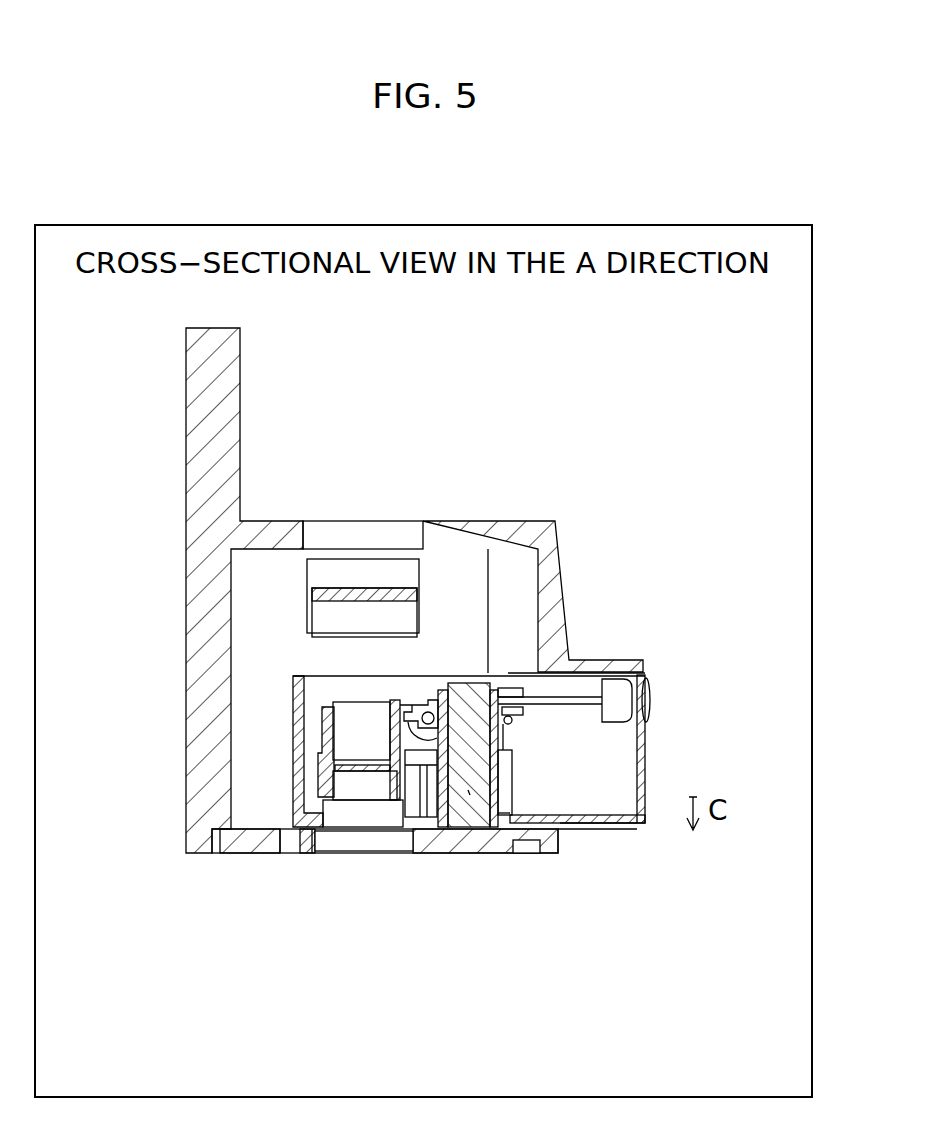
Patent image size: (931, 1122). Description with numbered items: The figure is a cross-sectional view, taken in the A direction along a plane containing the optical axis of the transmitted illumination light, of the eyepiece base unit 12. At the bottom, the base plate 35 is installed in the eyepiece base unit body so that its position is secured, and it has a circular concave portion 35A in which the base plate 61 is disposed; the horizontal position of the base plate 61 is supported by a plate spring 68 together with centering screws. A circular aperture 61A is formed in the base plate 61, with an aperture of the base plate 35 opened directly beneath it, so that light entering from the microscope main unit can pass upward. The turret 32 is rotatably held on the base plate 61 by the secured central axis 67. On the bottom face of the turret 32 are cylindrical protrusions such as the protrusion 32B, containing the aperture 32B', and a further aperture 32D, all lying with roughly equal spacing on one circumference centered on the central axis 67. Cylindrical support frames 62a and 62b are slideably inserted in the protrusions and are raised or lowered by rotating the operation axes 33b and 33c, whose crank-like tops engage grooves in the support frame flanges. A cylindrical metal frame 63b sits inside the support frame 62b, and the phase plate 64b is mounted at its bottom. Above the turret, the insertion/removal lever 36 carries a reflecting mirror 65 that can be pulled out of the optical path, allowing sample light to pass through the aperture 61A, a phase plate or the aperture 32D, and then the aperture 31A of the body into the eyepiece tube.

The eyepiece base unit 12 is at (637, 378).
The aperture of the eyepiece base unit body 31A is at (363, 521).
The insertion/removal lever 36 is at (307, 578).
The reflecting mirror 65 is at (385, 589).
The turret 32 is at (648, 752).
The cylindrical protrusion 32B is at (211, 751).
The aperture of the protrusion 32B' is at (355, 855).
The cylindrical support frame 62b is at (322, 713).
The cylindrical metal frame 63b is at (333, 707).
The phase plate 64b is at (358, 772).
The operation axis 33c is at (428, 712).
The base plate 61 is at (440, 835).
The central axis 67 is at (480, 793).
The cylindrical support frame 62a is at (513, 740).
The base plate 35 is at (247, 853).
The circular concave portion 35A is at (530, 853).
The plate spring 68 is at (287, 853).
The circular aperture 61A is at (397, 853).
The operation axis 33b is at (607, 823).
The aperture 32D is at (627, 833).